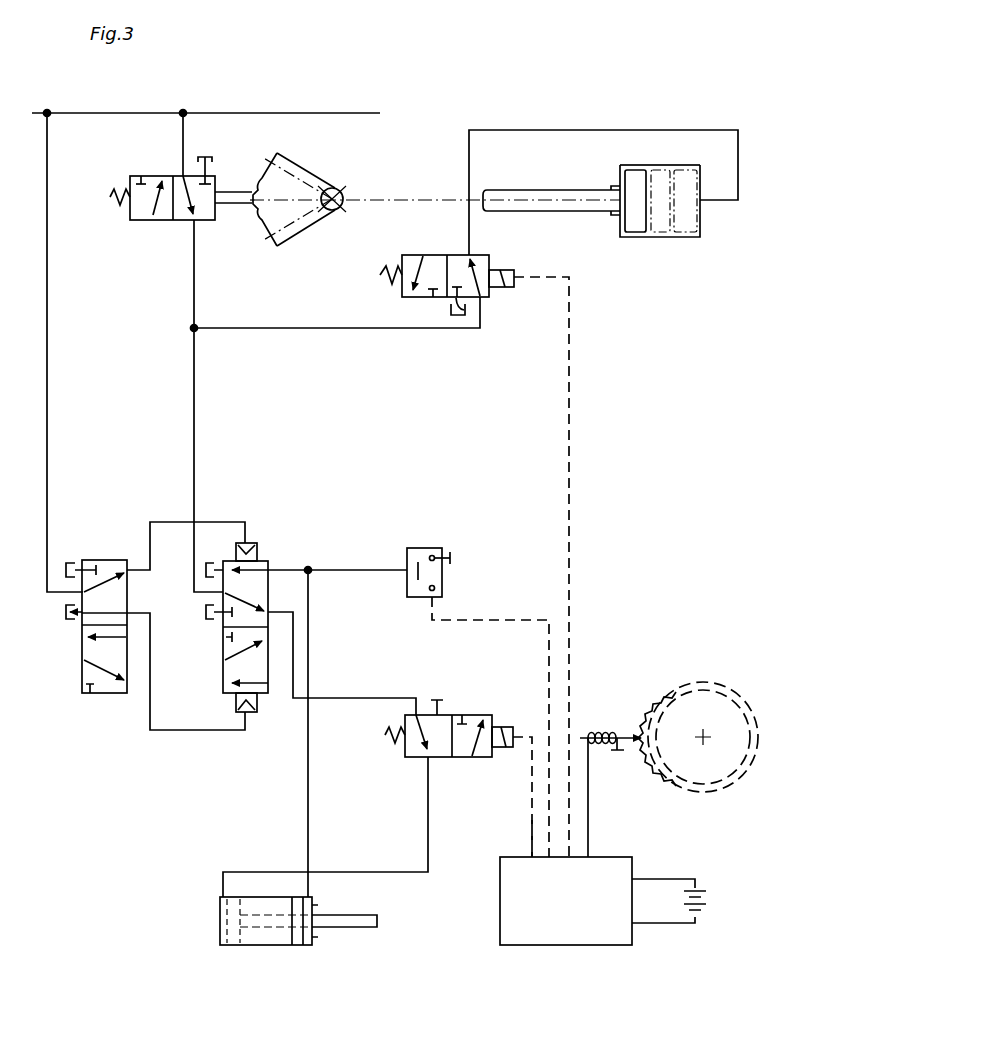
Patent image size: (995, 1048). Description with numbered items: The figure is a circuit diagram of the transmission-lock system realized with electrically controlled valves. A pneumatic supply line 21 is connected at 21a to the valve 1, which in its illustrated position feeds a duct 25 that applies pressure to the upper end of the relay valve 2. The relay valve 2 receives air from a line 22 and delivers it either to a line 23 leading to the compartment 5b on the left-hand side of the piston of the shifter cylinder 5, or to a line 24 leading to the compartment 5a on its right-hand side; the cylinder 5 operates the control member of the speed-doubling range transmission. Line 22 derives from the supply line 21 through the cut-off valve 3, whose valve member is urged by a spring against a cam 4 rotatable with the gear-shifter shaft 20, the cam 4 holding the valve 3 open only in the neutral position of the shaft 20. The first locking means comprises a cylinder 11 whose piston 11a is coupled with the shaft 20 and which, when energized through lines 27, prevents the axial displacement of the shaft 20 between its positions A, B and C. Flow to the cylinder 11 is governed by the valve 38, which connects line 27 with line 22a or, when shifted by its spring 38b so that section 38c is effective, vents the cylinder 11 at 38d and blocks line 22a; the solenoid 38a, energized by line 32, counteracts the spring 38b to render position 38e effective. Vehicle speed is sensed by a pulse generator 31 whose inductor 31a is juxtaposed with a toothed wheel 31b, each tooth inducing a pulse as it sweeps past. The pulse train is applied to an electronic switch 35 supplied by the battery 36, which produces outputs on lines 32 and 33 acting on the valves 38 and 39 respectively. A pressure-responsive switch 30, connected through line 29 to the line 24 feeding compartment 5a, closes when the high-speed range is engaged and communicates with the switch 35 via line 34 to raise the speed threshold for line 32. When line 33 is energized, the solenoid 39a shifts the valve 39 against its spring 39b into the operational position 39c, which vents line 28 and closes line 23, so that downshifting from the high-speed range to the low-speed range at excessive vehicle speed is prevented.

The pneumatic supply line 21 is at (315, 111).
The supply line connection 21a is at (51, 440).
The supply line to relay valve 22 is at (190, 397).
The pressure line to lock valve 22a is at (301, 331).
The cut-off valve 3 is at (145, 210).
The cam 4 is at (310, 178).
The fluid lines to locking cylinder 27 is at (552, 129).
The gear-shifter shaft 20 is at (560, 194).
The locking cylinder 11 is at (689, 240).
The locking piston 11a is at (638, 224).
The shaft position A is at (692, 167).
The shaft position B is at (663, 167).
The shaft position C is at (637, 167).
The first lock control valve 38 is at (428, 293).
The solenoid of valve 38 38a is at (508, 284).
The spring of valve 38 38b is at (386, 289).
The venting section of valve 38 38c is at (414, 255).
The vent of valve 38 38d is at (464, 313).
The pressurizing position of valve 38 38e is at (486, 255).
The first output line 32 is at (572, 573).
The duct to relay valve 25 is at (167, 518).
The valve 1 is at (96, 650).
The relay valve 2 is at (235, 645).
The pressure line to switch 29 is at (366, 567).
The pressure-responsive switch 30 is at (429, 553).
The switch signal line 34 is at (513, 617).
The line to right-hand compartment 24 is at (311, 637).
The line to left-hand compartment 23 is at (358, 697).
The second lock control valve 39 is at (460, 745).
The solenoid of valve 39 39a is at (505, 749).
The spring of valve 39 39b is at (386, 741).
The operational position of valve 39 39c is at (471, 714).
The vented line 28 is at (378, 869).
The shifter cylinder 5 is at (272, 947).
The right-hand compartment 5a is at (308, 947).
The left-hand compartment 5b is at (225, 947).
The pulse generator 31 is at (627, 733).
The inductor 31a is at (601, 746).
The toothed wheel 31b is at (738, 758).
The second output line 33 is at (530, 836).
The electronic switch 35 is at (562, 932).
The battery 36 is at (703, 899).